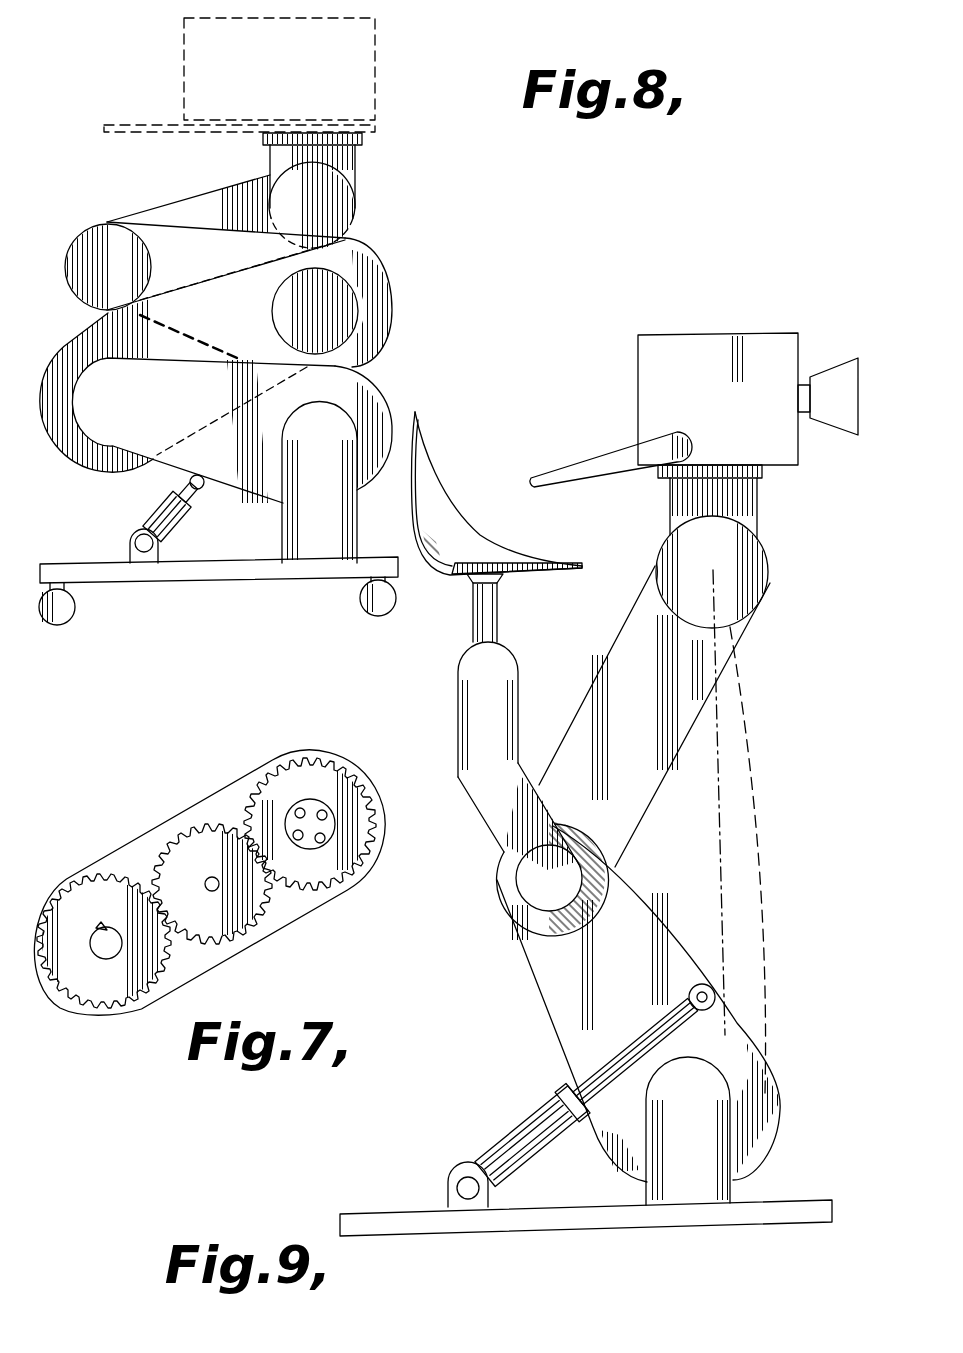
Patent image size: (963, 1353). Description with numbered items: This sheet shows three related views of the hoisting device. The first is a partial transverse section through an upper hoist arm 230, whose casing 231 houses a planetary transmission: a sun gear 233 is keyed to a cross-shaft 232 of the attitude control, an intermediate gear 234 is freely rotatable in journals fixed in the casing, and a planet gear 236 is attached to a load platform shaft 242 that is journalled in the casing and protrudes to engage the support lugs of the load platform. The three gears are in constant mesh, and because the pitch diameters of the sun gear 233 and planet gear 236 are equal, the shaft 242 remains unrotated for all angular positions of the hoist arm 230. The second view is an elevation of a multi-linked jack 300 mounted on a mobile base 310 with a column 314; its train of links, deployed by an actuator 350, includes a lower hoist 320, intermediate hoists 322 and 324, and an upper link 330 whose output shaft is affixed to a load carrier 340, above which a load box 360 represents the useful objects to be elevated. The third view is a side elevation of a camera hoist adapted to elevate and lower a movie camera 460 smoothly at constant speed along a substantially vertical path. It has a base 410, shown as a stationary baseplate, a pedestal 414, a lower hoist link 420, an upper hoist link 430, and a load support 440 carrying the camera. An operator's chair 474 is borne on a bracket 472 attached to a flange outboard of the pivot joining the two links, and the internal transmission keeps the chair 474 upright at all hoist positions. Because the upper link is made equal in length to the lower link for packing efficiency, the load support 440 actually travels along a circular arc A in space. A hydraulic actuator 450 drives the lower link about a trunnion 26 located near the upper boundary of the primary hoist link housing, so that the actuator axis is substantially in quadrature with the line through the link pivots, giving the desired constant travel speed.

In FIG. 8, the multi-linked jack 300 is at (125, 95).
In FIG. 8, the load box 360 is at (376, 40).
In FIG. 8, the load carrier 340 is at (345, 158).
In FIG. 8, the upper link 330 is at (195, 203).
In FIG. 8, the intermediate hoist 322 is at (58, 345).
In FIG. 8, the intermediate hoist 324 is at (385, 300).
In FIG. 8, the lower hoist 320 is at (370, 400).
In FIG. 8, the pedestal column 314 is at (308, 545).
In FIG. 8, the actuator 350 is at (165, 510).
In FIG. 8, the mobile base 310 is at (205, 580).
In FIG. 9, the movie camera 460 is at (705, 335).
In FIG. 9, the load support 440 is at (748, 498).
In FIG. 9, the upper hoist link 430 is at (640, 598).
In FIG. 9, the circular arc A is at (748, 742).
In FIG. 9, the operator's chair 474 is at (440, 462).
In FIG. 9, the bracket 472 is at (462, 690).
In FIG. 9, the lower hoist link 420 is at (772, 1068).
In FIG. 9, the pedestal column 414 is at (720, 1132).
In FIG. 9, the trunnion 26 is at (697, 985).
In FIG. 9, the hydraulic cylinder 450 is at (530, 1126).
In FIG. 9, the base 410 is at (795, 1215).
In FIG. 7, the upper hoist arm 230 is at (155, 790).
In FIG. 7, the gear housing 231 is at (302, 915).
In FIG. 7, the sun gear 233 is at (112, 985).
In FIG. 7, the cross-shaft 232 is at (118, 930).
In FIG. 7, the intermediate gear 234 is at (210, 843).
In FIG. 7, the planet gear 236 is at (316, 777).
In FIG. 7, the load platform shaft 242 is at (325, 826).